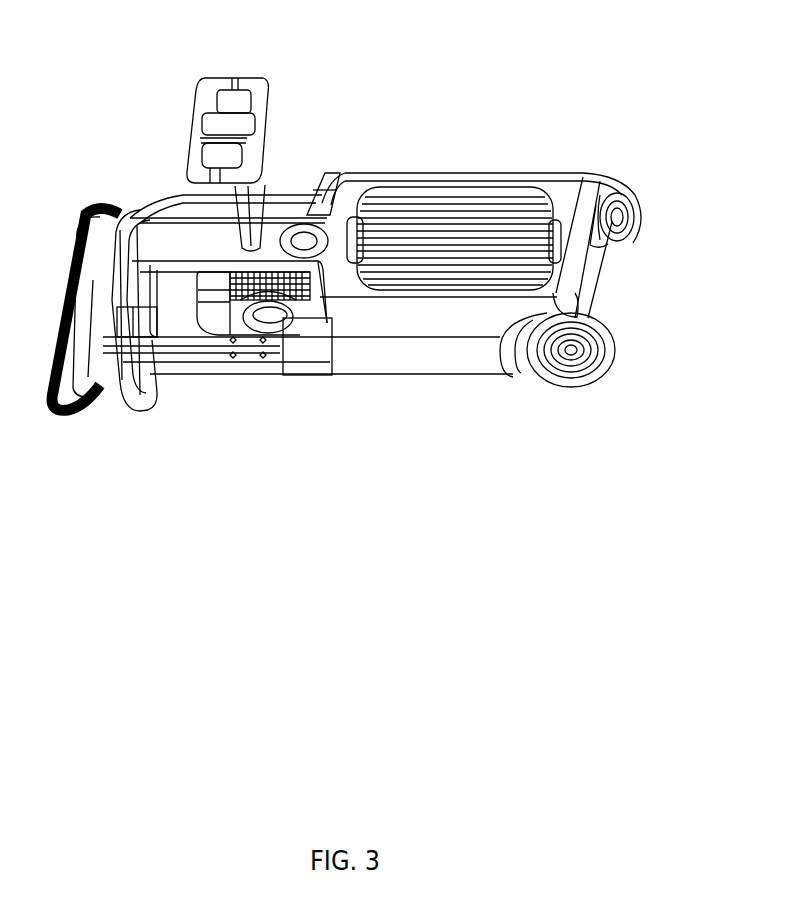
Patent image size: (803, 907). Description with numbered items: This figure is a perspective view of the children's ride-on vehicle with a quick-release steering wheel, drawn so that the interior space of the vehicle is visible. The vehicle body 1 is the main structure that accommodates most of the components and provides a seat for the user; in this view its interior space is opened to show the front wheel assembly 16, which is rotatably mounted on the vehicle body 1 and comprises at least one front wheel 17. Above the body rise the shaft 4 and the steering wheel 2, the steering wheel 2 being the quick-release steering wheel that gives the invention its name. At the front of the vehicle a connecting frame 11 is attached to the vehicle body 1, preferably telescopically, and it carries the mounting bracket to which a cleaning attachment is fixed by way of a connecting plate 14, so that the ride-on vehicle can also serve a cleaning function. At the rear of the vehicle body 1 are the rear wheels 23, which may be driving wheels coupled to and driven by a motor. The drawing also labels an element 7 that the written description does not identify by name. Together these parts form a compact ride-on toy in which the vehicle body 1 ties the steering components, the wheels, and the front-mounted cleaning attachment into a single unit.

The vehicle body 1 is at (340, 197).
The steering wheel 2 is at (223, 125).
The shaft 4 is at (255, 200).
The front body 7 is at (183, 303).
The connecting frame 11 is at (175, 350).
The connecting plate 14 is at (73, 367).
The front wheel assembly 16 is at (230, 315).
The front wheel 17 is at (300, 318).
The rear wheels 23 is at (636, 225).